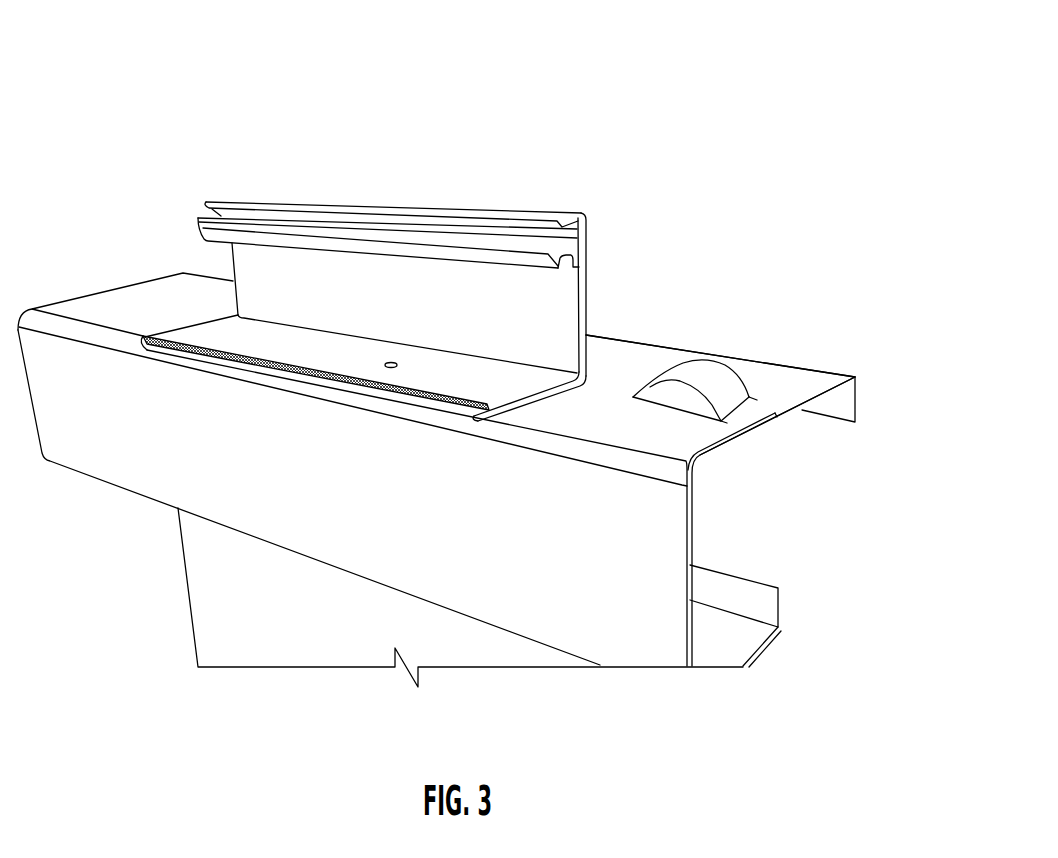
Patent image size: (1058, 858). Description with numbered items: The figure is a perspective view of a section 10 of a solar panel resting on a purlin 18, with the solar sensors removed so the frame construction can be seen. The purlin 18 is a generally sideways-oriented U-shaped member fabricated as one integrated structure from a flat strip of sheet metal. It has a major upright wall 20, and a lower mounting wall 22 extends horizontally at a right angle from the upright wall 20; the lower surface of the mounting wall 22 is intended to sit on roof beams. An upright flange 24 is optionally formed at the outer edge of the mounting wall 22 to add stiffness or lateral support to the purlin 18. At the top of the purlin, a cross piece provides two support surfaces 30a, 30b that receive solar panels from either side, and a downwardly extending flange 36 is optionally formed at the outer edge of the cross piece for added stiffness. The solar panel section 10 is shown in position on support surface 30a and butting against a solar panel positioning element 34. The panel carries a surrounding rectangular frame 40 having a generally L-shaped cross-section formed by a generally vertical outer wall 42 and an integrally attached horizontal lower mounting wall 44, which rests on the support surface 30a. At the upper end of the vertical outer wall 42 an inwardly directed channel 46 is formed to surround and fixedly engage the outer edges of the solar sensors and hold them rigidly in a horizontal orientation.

The solar panel section 10 is at (586, 420).
The purlin 18 is at (475, 480).
The upright wall 20 is at (690, 548).
The mounting wall 22 is at (767, 643).
The upright flange 24 is at (770, 605).
The support surface 30a is at (727, 434).
The support surface 30b is at (828, 379).
The solar panel positioning element 34 is at (740, 382).
The downwardly extending flange 36 is at (857, 409).
The rectangular frame 40 is at (405, 314).
The vertical outer wall 42 is at (587, 293).
The horizontal lower mounting wall 44 is at (521, 402).
The inwardly directed channel 46 is at (455, 232).